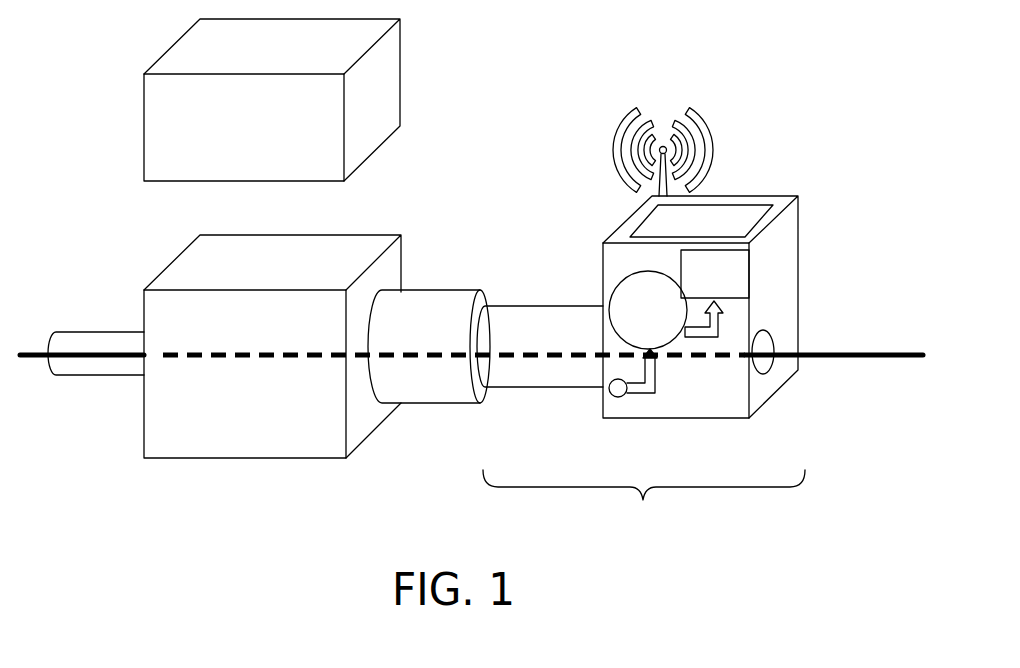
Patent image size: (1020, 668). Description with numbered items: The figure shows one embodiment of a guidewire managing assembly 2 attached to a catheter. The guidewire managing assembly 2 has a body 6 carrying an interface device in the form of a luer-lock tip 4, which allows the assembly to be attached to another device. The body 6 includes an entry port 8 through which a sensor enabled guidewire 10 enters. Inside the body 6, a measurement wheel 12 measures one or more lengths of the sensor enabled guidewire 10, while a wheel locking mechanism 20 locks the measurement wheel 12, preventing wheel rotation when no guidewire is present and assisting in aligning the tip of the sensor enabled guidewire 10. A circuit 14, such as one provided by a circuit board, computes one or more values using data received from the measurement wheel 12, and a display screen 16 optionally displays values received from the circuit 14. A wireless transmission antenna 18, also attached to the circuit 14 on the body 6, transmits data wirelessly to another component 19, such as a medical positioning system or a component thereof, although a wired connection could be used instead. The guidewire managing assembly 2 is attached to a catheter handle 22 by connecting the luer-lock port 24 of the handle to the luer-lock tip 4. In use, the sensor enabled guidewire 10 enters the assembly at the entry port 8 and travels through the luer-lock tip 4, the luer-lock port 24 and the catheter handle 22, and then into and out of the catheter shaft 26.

The guidewire managing assembly 2 is at (730, 488).
The luer-lock tip 4 is at (549, 318).
The body 6 is at (783, 318).
The entry port 8 is at (771, 362).
The sensor enabled guidewire 10 is at (113, 358).
The measurement wheel 12 is at (640, 290).
The circuit 14 is at (737, 277).
The display screen 16 is at (740, 215).
The wireless transmission antenna 18 is at (663, 146).
The another component 19 is at (188, 56).
The wheel locking mechanism 20 is at (650, 393).
The catheter handle 22 is at (190, 266).
The luer-lock port 24 is at (432, 308).
The catheter shaft 26 is at (82, 332).